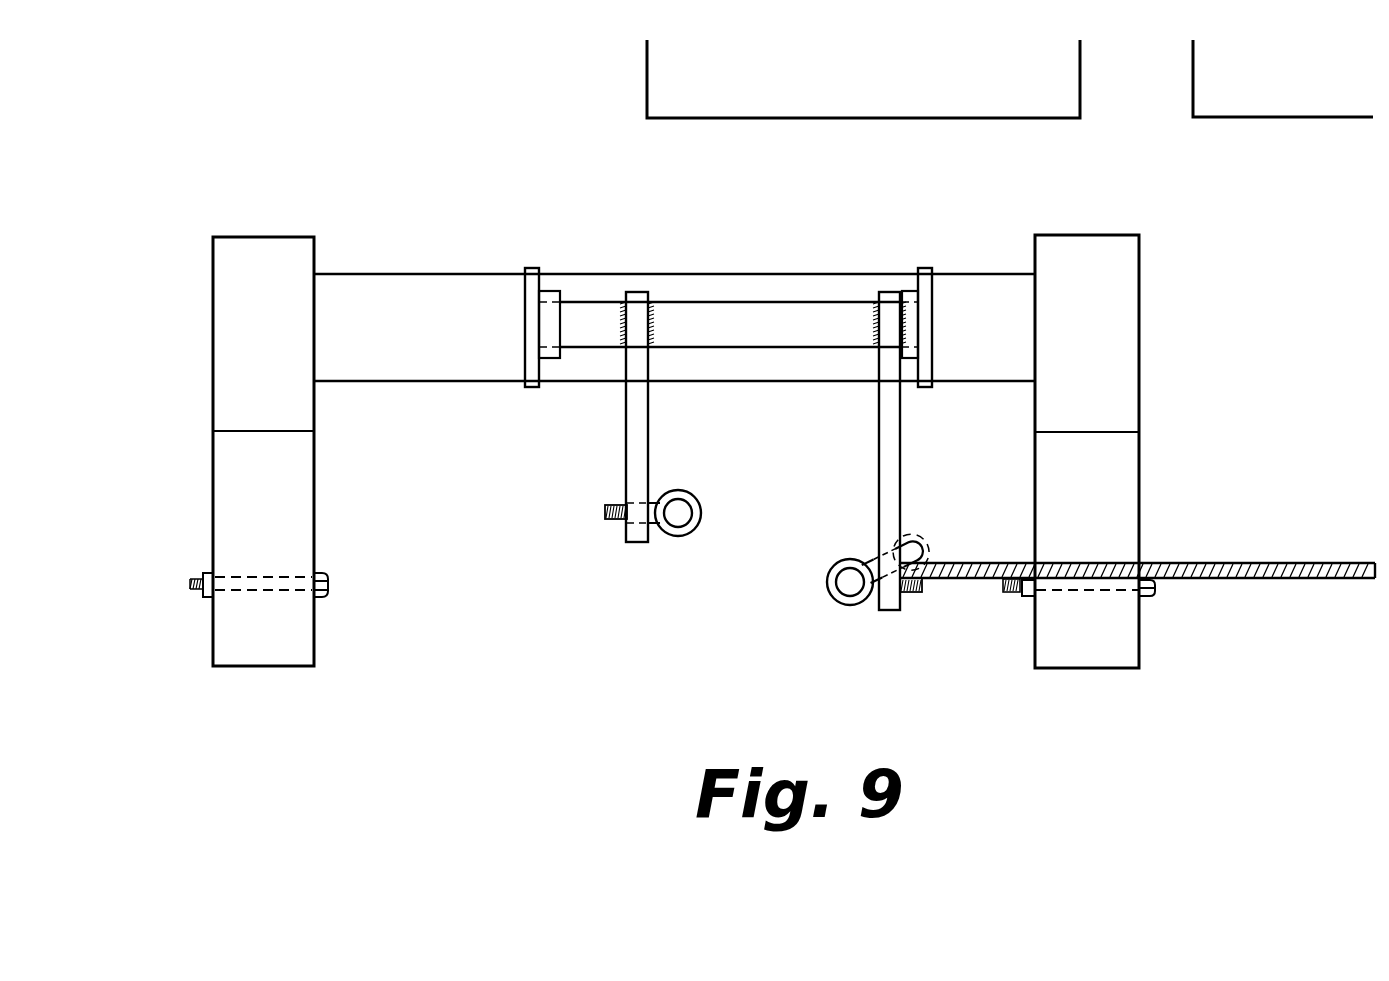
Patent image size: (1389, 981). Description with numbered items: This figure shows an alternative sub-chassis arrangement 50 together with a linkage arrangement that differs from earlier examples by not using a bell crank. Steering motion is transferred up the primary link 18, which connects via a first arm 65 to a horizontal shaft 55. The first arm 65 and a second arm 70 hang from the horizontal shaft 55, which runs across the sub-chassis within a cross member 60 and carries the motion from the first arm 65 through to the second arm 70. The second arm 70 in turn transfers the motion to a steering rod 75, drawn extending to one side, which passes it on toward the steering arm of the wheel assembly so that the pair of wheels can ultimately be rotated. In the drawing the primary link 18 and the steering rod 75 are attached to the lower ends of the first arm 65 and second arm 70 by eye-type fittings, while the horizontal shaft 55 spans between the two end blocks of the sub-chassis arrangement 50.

The mounting frame assembly 50 is at (563, 423).
The horizontal shaft 55 is at (772, 308).
The cross beam 60 is at (983, 363).
The first arm 65 is at (635, 463).
The second arm 70 is at (887, 475).
The primary link 18 is at (668, 532).
The steering rod 75 is at (842, 602).